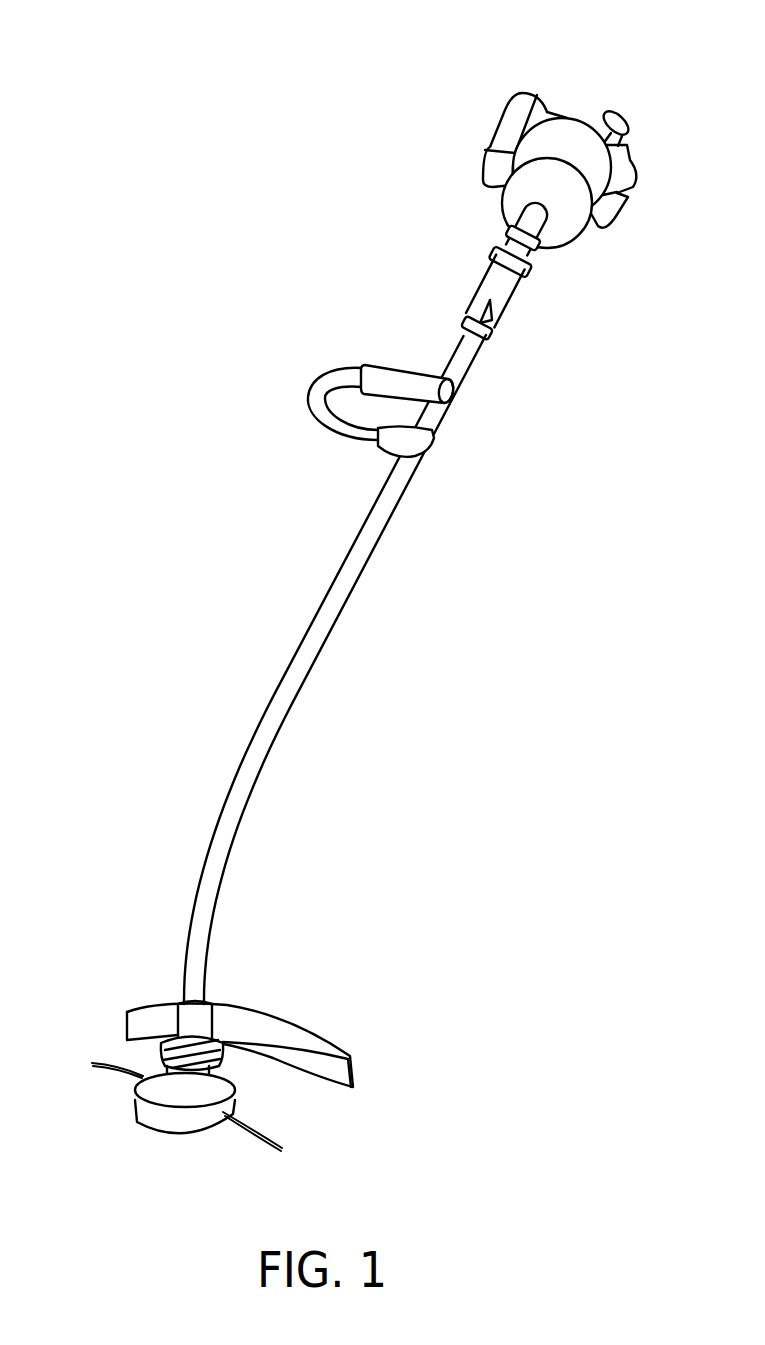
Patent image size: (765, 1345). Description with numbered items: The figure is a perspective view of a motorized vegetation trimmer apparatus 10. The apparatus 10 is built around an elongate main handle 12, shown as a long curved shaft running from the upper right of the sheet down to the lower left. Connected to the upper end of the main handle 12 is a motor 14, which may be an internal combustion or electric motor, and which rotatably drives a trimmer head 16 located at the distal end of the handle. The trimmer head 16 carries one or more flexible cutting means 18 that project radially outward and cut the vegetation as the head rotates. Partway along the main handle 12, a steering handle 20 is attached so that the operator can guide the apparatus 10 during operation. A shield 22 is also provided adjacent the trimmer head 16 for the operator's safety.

The motorized vegetation trimmer apparatus 10 is at (349, 629).
The elongate main handle 12 is at (265, 707).
The motor 14 is at (581, 117).
The trimmer head 16 is at (198, 1095).
The cutting means 18 is at (112, 1068).
The steering handle 20 is at (408, 387).
The shield 22 is at (248, 1020).